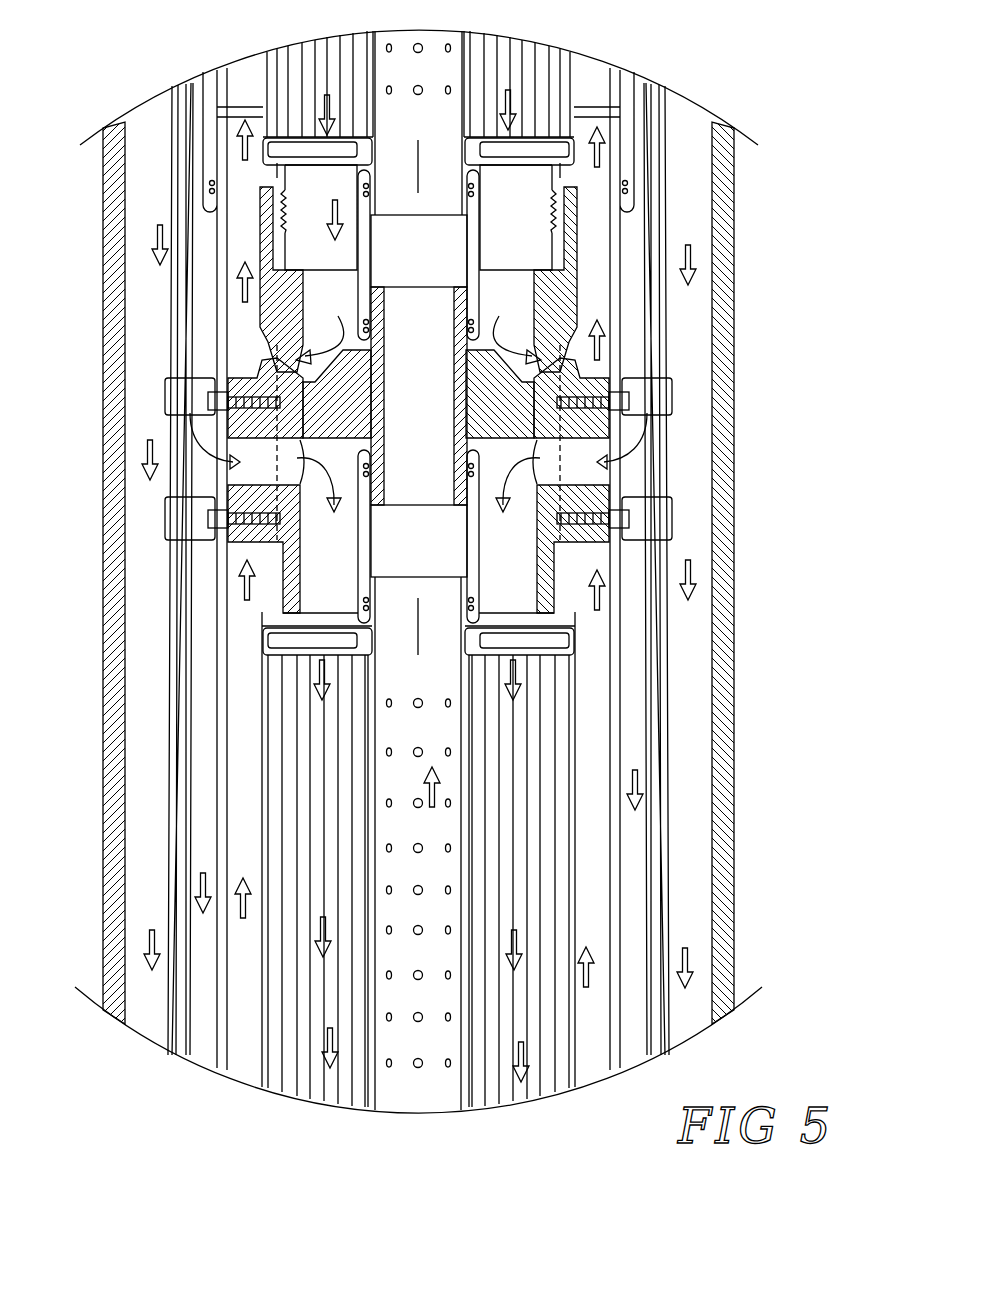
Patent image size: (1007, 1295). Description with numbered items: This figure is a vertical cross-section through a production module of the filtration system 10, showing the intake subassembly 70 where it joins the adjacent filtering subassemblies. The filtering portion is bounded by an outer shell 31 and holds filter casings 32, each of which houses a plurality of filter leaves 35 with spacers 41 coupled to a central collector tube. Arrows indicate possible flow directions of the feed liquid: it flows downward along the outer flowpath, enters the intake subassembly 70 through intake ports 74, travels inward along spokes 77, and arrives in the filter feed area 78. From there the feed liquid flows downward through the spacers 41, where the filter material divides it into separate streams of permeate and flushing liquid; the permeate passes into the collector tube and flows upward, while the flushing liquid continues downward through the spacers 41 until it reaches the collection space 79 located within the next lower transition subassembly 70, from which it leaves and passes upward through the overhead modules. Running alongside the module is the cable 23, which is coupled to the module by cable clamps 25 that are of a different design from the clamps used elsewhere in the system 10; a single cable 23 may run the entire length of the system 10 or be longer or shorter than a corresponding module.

The system 10 is at (768, 100).
The cable 23 is at (170, 587).
The cable clamps 25 is at (165, 512).
The outer shell 31 is at (215, 716).
The filter casings 32 is at (262, 775).
The filters 35 is at (292, 110).
The spacers 41 is at (297, 890).
The intake subassembly 70 is at (556, 570).
The intake ports 74 is at (598, 479).
The spokes 77 is at (600, 497).
The filter feed area 78 is at (503, 547).
The collection space 79 is at (518, 315).